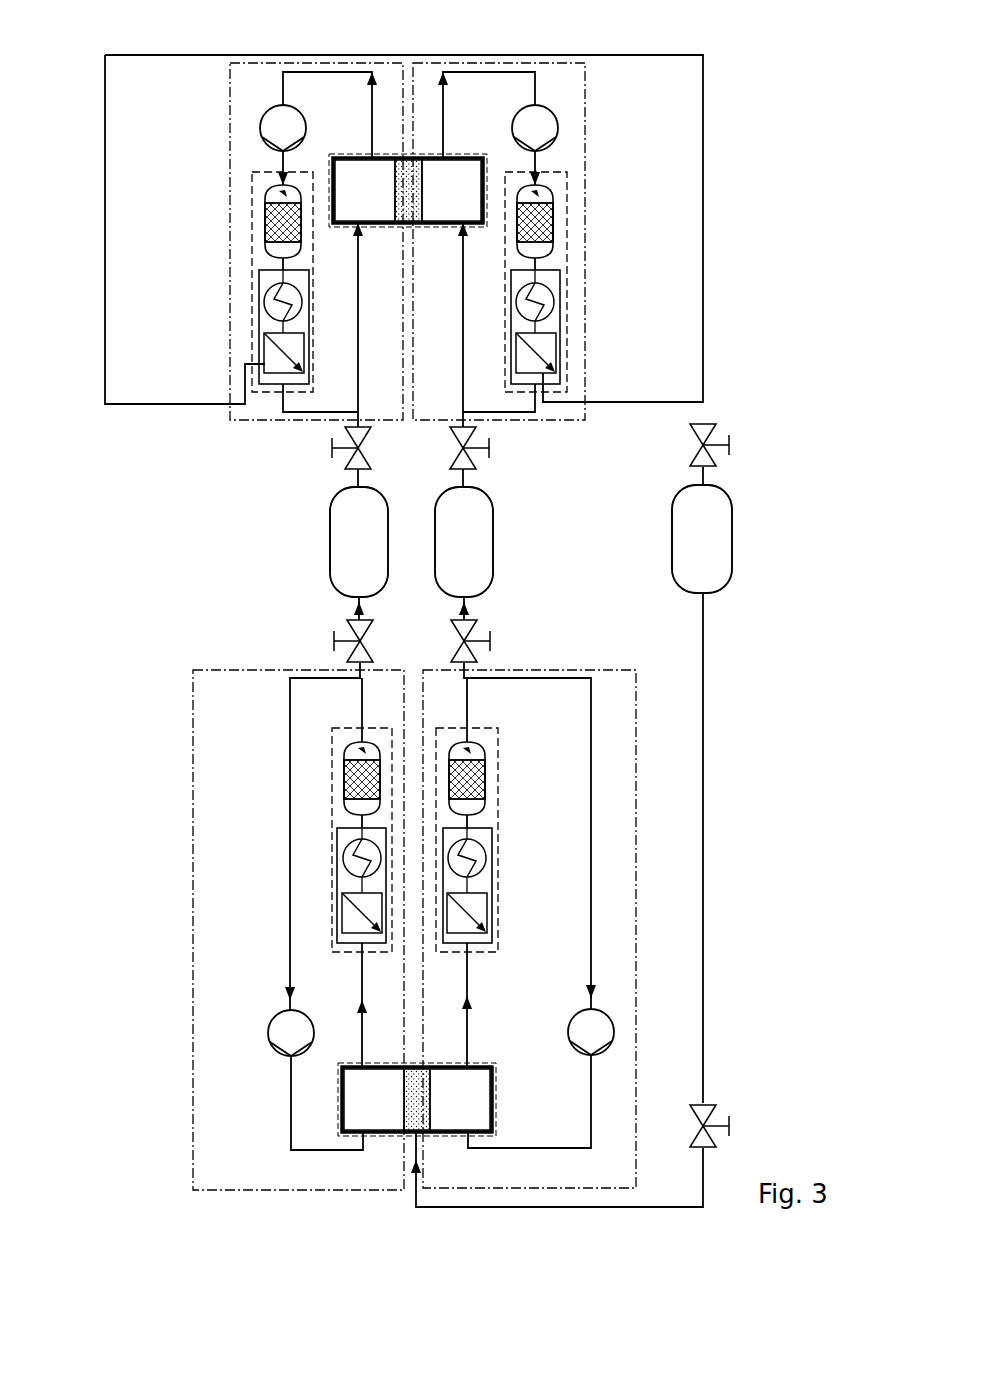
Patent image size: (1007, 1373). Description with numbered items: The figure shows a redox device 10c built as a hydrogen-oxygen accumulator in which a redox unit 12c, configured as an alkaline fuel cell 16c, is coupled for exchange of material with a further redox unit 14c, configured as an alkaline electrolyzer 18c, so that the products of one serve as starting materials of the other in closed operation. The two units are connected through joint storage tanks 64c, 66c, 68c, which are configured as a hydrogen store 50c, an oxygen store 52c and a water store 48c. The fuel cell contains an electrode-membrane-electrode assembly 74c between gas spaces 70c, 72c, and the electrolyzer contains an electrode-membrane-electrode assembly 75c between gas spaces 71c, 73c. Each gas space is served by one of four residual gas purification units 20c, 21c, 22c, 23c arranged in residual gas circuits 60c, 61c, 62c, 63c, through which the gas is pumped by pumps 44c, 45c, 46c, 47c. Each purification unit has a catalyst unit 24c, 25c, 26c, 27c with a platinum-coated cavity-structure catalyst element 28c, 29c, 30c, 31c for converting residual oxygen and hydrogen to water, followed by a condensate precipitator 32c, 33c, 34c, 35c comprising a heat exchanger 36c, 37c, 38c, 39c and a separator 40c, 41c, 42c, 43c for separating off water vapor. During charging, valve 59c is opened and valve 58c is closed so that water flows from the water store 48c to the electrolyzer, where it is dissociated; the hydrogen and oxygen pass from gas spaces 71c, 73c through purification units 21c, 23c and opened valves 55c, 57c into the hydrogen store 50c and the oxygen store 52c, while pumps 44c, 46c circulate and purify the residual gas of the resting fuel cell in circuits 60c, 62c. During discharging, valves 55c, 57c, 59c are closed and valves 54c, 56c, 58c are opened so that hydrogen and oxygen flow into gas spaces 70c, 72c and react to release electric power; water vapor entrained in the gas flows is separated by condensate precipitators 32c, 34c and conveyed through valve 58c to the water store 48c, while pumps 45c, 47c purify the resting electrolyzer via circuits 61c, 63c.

The redox device 10c is at (126, 614).
The redox unit 12c is at (335, 160).
The further redox unit 14c is at (342, 1108).
The alkaline fuel cell 16c is at (408, 190).
The alkaline electrolyzer 18c is at (417, 1099).
The residual gas purification unit 20c is at (252, 268).
The residual gas purification unit 21c is at (332, 760).
The residual gas purification unit 22c is at (567, 262).
The residual gas purification unit 23c is at (498, 803).
The catalyst unit 24c is at (275, 192).
The catalyst unit 25c is at (350, 745).
The catalyst unit 26c is at (540, 195).
The catalyst unit 27c is at (475, 745).
The catalyst element 28c is at (272, 213).
The catalyst element 29c is at (350, 795).
The catalyst element 30c is at (545, 222).
The catalyst element 31c is at (478, 778).
The condensate precipitator 32c is at (259, 325).
The condensate precipitator 33c is at (337, 940).
The condensate precipitator 34c is at (545, 300).
The condensate precipitator 35c is at (478, 853).
The heat exchanger 36c is at (275, 300).
The heat exchanger 37c is at (352, 858).
The heat exchanger 38c is at (545, 338).
The heat exchanger 39c is at (480, 898).
The separator 40c is at (265, 358).
The separator 41c is at (345, 908).
The separator 42c is at (555, 357).
The separator 43c is at (483, 925).
The pump 44c is at (282, 127).
The pump 45c is at (283, 1028).
The pump 46c is at (540, 128).
The pump 47c is at (598, 1030).
The water store 48c is at (705, 535).
The hydrogen store 50c is at (345, 505).
The oxygen store 52c is at (470, 508).
The valve 54c is at (358, 448).
The valve 55c is at (360, 641).
The valve 56c is at (463, 448).
The valve 57c is at (464, 641).
The valve 58c is at (703, 445).
The valve 59c is at (705, 1125).
The residual gas circuit 60c is at (228, 103).
The residual gas circuit 61c is at (193, 1030).
The residual gas circuit 62c is at (586, 100).
The residual gas circuit 63c is at (636, 975).
The joint storage tank 64c is at (359, 542).
The joint storage tank 66c is at (464, 542).
The joint storage tank 68c is at (702, 539).
The gas space 70c is at (355, 187).
The gas space 71c is at (356, 1112).
The gas space 72c is at (470, 175).
The gas space 73c is at (452, 1112).
The electrode-membrane-electrode assembly 74c is at (405, 200).
The electrode-membrane-electrode assembly 75c is at (418, 1115).